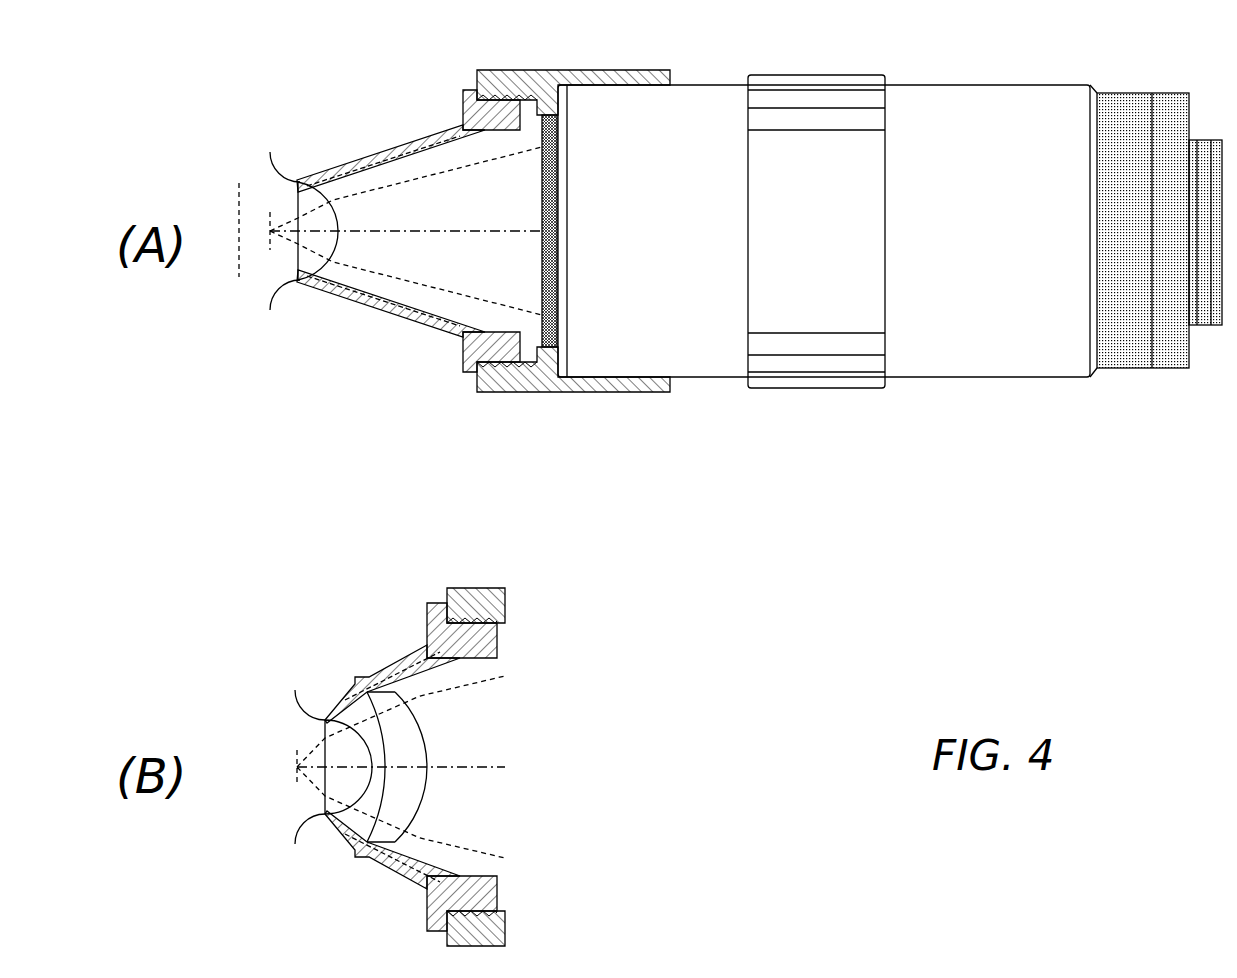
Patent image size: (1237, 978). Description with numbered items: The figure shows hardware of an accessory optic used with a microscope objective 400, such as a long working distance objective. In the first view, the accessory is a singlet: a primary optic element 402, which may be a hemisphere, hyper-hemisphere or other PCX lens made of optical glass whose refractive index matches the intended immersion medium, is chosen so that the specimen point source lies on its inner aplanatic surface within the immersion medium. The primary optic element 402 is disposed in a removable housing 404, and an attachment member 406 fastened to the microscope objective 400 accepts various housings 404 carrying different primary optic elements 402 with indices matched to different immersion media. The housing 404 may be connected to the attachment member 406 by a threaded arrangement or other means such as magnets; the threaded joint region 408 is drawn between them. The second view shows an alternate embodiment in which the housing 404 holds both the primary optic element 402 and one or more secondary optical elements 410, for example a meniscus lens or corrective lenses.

The microscope objective 400 is at (682, 307).
The primary optic element 402 is at (305, 200).
The housing 404 is at (387, 303).
The attachment member 406 is at (517, 390).
The threaded retaining ring 408 is at (505, 103).
The secondary optical element 410 is at (412, 728).